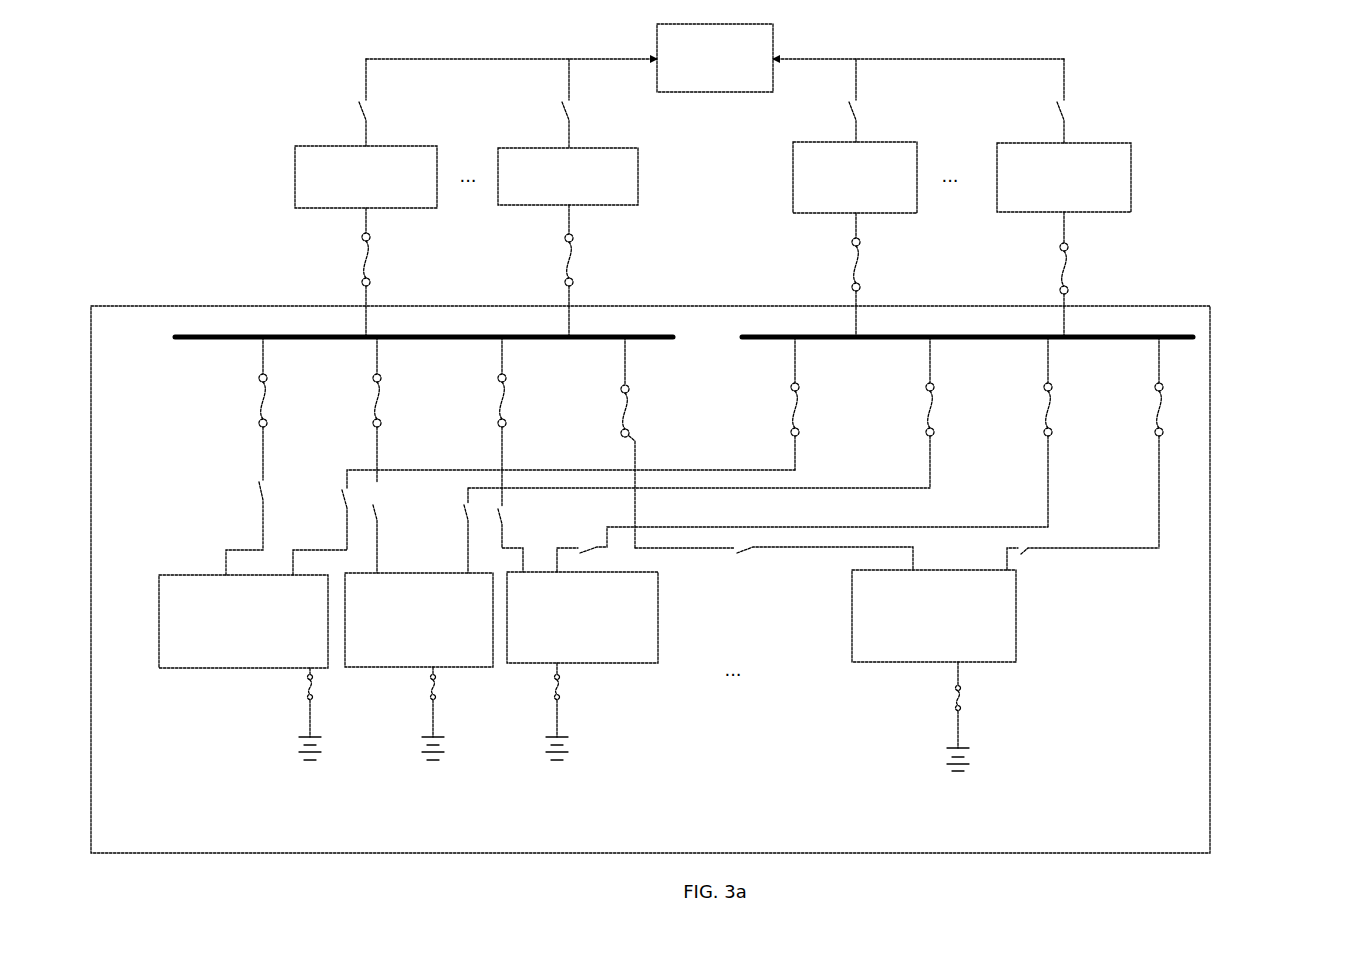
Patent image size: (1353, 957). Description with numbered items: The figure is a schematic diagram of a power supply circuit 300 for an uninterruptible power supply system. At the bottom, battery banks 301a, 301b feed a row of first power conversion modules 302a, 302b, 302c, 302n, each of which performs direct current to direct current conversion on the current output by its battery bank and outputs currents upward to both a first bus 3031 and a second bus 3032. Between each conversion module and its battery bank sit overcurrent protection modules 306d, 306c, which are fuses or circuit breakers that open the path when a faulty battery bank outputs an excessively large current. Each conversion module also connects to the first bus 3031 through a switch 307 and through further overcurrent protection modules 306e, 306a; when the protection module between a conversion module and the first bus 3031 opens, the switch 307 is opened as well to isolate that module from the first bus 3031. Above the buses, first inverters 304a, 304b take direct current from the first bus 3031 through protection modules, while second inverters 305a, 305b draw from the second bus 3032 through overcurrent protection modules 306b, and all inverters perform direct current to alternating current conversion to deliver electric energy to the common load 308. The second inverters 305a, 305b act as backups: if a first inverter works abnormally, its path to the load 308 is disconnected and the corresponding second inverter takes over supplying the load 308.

The power supply circuit 300 is at (1210, 590).
The load 308 is at (715, 58).
The first inverter 304a is at (366, 133).
The first inverter 304b is at (568, 132).
The second inverter 305a is at (855, 136).
The second inverter 305b is at (1064, 135).
The first bus 3031 is at (533, 340).
The second bus 3032 is at (895, 338).
The overcurrent protection module 306a is at (780, 400).
The overcurrent protection module 306b is at (1172, 407).
The overcurrent protection module 306c is at (972, 692).
The overcurrent protection module 306d is at (545, 692).
The overcurrent protection module 306e is at (250, 390).
The switch 307 is at (340, 490).
The first power conversion module 302a is at (243, 621).
The first power conversion module 302b is at (419, 620).
The first power conversion module 302c is at (582, 617).
The first power conversion module 302n is at (934, 616).
The battery bank 301a is at (545, 743).
The battery bank 301b is at (947, 758).